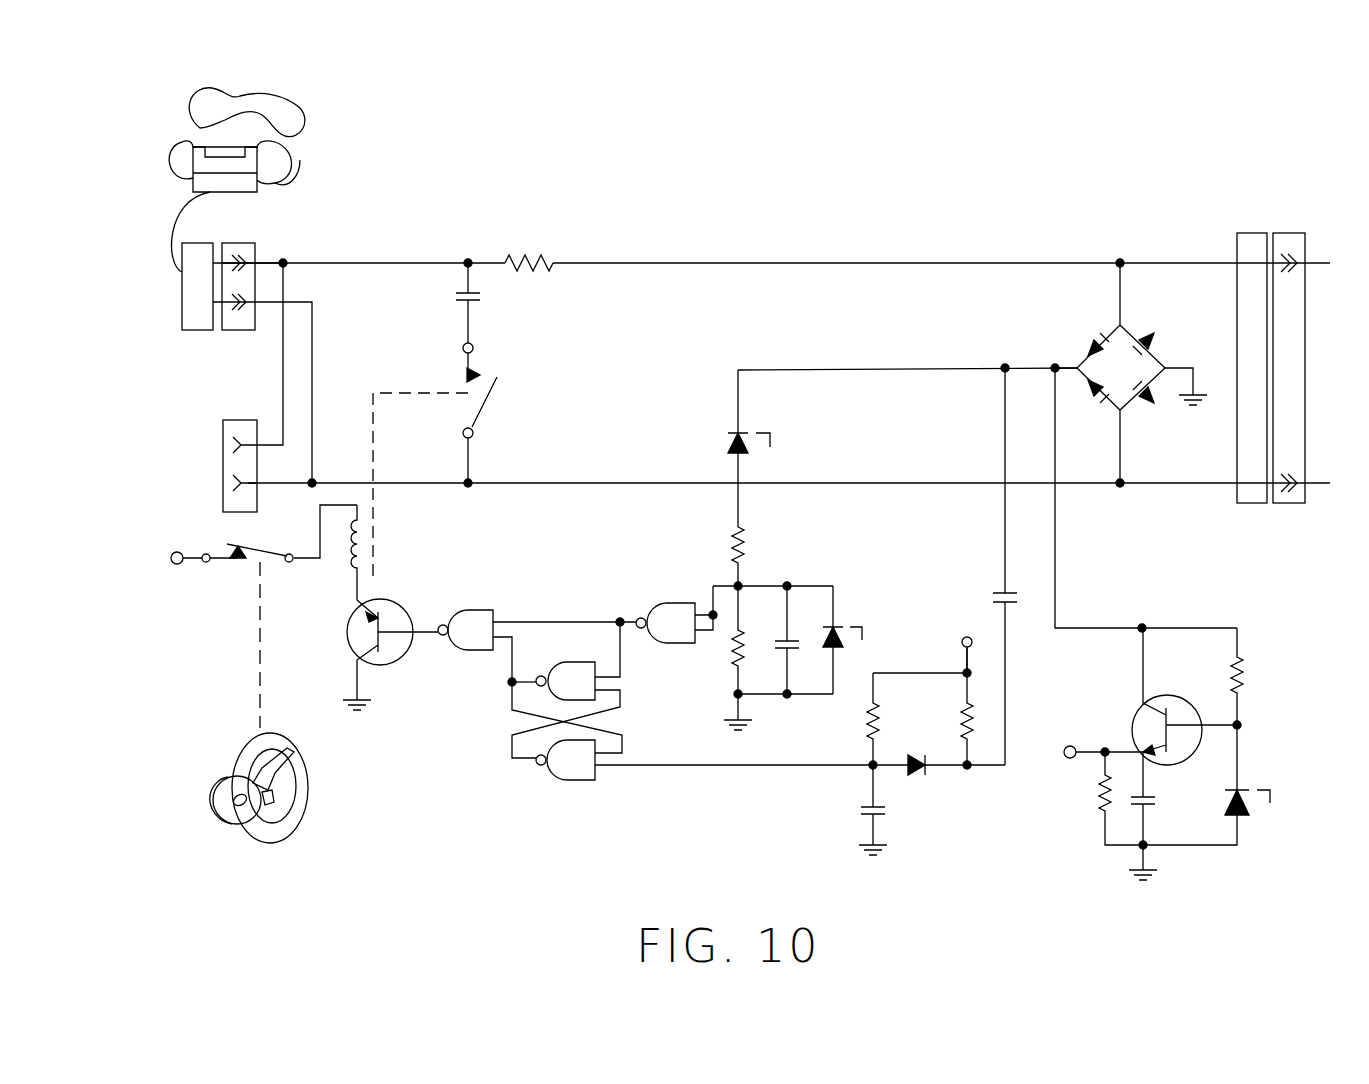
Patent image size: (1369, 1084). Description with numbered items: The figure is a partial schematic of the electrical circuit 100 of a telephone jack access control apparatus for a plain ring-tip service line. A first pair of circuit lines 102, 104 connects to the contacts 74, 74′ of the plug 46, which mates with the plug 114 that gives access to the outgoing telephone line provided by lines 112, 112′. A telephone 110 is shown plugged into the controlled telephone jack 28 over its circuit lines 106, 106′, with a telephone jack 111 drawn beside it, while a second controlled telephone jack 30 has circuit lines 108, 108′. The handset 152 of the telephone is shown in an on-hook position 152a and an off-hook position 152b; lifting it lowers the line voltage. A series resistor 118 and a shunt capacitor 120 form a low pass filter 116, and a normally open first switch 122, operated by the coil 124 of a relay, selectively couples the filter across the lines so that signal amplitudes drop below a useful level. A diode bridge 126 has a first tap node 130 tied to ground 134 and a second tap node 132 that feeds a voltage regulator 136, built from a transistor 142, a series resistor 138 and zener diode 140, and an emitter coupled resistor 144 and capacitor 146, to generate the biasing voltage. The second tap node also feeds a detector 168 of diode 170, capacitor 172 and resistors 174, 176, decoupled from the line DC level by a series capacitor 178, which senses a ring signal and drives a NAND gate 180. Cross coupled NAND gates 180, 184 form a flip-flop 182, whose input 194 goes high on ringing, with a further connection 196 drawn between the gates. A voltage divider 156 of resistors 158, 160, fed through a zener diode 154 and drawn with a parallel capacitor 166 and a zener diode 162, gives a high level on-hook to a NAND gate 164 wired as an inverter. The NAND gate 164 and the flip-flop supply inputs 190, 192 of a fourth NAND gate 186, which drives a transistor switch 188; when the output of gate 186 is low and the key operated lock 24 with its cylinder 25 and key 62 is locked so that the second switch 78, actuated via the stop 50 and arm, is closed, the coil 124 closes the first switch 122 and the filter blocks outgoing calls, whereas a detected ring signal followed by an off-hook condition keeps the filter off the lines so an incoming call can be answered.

The key operated lock 24 is at (308, 806).
The cylinder 25 is at (288, 768).
The controlled telephone jack 28 is at (253, 243).
The controlled telephone jack 30 is at (247, 420).
The plug 46 is at (1250, 233).
The stop 50 is at (258, 669).
The key 62 is at (247, 836).
The contact 74 is at (1280, 262).
The contact 74′ is at (1280, 485).
The second switch 78 is at (270, 533).
The electrical circuit 100 is at (1121, 213).
The circuit line 102 is at (947, 263).
The circuit line 104 is at (893, 483).
The circuit line 106 is at (257, 252).
The circuit line 106′ is at (252, 318).
The circuit line 108 is at (238, 445).
The circuit line 108′ is at (238, 487).
The telephone 110 is at (233, 192).
The telephone jack 111 is at (182, 292).
The line 112 is at (1330, 263).
The line 112′ is at (1330, 483).
The plug 114 is at (1300, 503).
The low pass filter 116 is at (456, 230).
The series resistor 118 is at (529, 250).
The shunt capacitor 120 is at (445, 303).
The first switch 122 is at (449, 460).
The coil 124 is at (385, 552).
The diode bridge 126 is at (1109, 373).
The first tap node 130 is at (1162, 368).
The second tap node 132 is at (1077, 362).
The ground 134 is at (1190, 404).
The voltage regulator 136 is at (1162, 628).
The resistor 138 is at (1261, 678).
The zener diode 140 is at (1213, 785).
The transistor 142 is at (1184, 696).
The resistor 144 is at (1100, 796).
The capacitor 146 is at (1159, 820).
The handset 152 is at (172, 150).
The on-hook position 152a is at (268, 186).
The off-hook position 152b is at (288, 112).
The zener diode 154 is at (879, 447).
The voltage divider 156 is at (848, 549).
The resistor 158 is at (760, 556).
The resistor 160 is at (763, 656).
The zener diode 162 is at (850, 640).
The NAND gate 164 is at (668, 611).
The capacitor 166 is at (795, 636).
The detector 168 is at (880, 751).
The diode 170 is at (939, 782).
The capacitor 172 is at (858, 810).
The resistor 174 is at (895, 719).
The resistor 176 is at (947, 708).
The series capacitor 178 is at (991, 564).
The NAND gate 180 is at (704, 774).
The flip-flop 182 is at (659, 715).
The NAND gate 184 is at (566, 690).
The NAND gate 186 is at (530, 671).
The transistor switch 188 is at (371, 654).
The input 190 is at (505, 612).
The input 192 is at (510, 668).
The input 194 is at (622, 718).
The line 196 is at (622, 670).